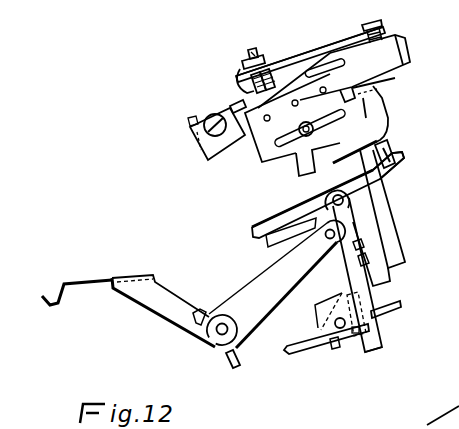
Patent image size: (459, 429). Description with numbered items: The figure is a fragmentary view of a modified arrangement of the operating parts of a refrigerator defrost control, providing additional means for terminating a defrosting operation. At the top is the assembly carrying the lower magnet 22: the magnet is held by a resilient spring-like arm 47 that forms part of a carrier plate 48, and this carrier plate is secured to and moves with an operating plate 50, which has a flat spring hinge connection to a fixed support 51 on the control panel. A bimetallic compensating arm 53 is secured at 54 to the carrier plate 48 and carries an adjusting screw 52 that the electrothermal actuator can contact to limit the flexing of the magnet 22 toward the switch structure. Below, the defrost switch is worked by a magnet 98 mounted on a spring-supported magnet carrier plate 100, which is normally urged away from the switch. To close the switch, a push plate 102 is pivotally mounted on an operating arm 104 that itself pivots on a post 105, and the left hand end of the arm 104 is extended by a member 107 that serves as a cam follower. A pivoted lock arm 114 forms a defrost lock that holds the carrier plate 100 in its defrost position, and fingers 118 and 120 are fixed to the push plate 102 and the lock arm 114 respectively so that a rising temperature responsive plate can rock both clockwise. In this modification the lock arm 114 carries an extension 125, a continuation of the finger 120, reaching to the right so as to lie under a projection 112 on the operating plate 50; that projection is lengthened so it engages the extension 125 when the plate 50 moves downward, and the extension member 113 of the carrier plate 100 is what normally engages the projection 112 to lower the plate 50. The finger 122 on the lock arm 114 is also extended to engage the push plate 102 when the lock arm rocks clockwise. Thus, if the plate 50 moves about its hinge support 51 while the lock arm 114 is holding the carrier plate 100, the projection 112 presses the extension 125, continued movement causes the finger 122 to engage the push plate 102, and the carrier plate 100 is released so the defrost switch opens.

The lower magnet 22 is at (190, 122).
The resilient spring-like arm 47 is at (306, 72).
The carrier plate 48 is at (385, 55).
The operating plate 50 is at (262, 156).
The fixed support 51 is at (395, 84).
The adjusting screw 52 is at (274, 72).
The bimetallic compensating arm 53 is at (281, 64).
The securing point of the bimetallic compensating arm 54 is at (386, 28).
The magnet 98 is at (314, 312).
The magnet carrier plate 100 is at (300, 354).
The push plate 102 is at (385, 333).
The operating arm 104 is at (258, 292).
The post 105 is at (208, 344).
The cam follower member 107 is at (92, 255).
The projection 112 is at (397, 150).
The extension member 113 is at (392, 138).
The lock arm 114 is at (360, 223).
The finger 118 is at (266, 245).
The finger 120 is at (255, 227).
The finger 122 is at (363, 253).
The extension 125 is at (397, 165).